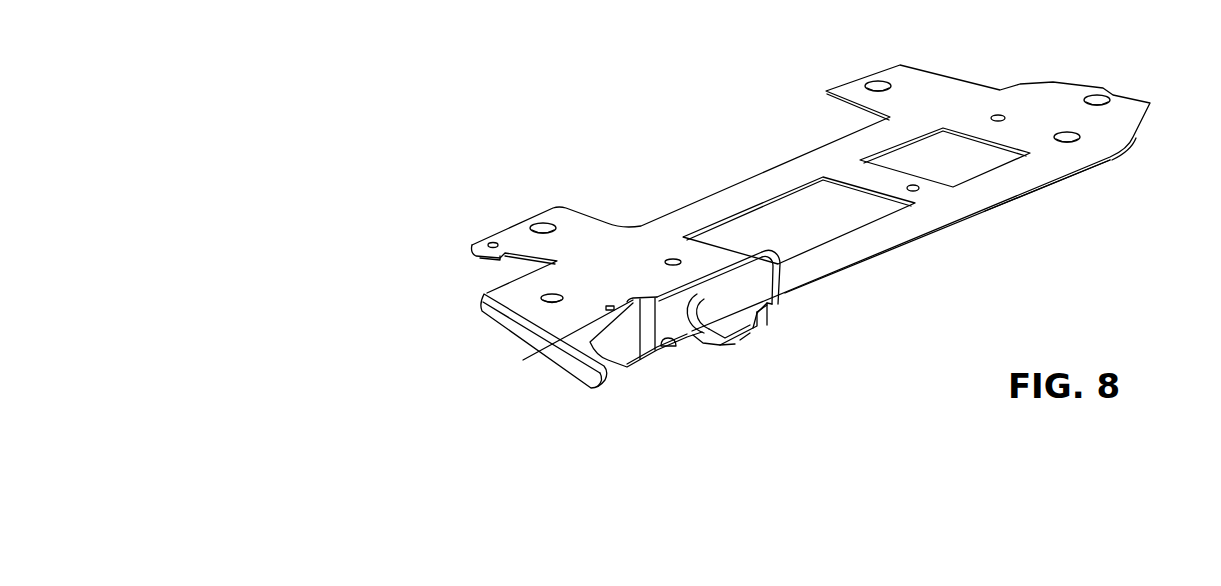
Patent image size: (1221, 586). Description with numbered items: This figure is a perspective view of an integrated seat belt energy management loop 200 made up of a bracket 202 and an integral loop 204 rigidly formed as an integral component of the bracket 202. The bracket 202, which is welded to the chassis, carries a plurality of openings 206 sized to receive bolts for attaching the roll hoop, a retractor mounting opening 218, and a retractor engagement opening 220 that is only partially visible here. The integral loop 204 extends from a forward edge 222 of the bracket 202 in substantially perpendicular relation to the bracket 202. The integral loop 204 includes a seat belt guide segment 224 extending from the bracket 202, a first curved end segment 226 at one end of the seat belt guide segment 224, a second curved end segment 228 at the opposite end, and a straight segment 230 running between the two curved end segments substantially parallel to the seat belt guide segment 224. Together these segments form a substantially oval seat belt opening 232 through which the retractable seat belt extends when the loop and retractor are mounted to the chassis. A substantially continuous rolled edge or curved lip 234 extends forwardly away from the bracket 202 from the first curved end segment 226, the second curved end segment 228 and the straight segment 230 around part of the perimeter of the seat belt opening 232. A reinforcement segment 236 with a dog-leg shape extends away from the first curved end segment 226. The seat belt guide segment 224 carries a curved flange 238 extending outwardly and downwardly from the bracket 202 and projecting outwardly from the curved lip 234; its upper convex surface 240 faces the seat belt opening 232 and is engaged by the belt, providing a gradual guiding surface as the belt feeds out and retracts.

The integrated seat belt energy management loop 200 is at (506, 115).
The bracket 202 is at (735, 144).
The integral loop 204 is at (656, 376).
The openings 206 is at (880, 83).
The retractor mounting opening 218 is at (549, 298).
The retractor engagement opening 220 is at (523, 360).
The forward edge 222 is at (980, 213).
The seat belt guide segment 224 is at (760, 318).
The first curved end segment 226 is at (679, 340).
The second curved end segment 228 is at (780, 270).
The straight segment 230 is at (726, 280).
The seat belt opening 232 is at (762, 296).
The curved lip 234 is at (772, 267).
The reinforcement segment 236 is at (658, 295).
The curved flange 238 is at (735, 345).
The upper convex surface 240 is at (745, 343).